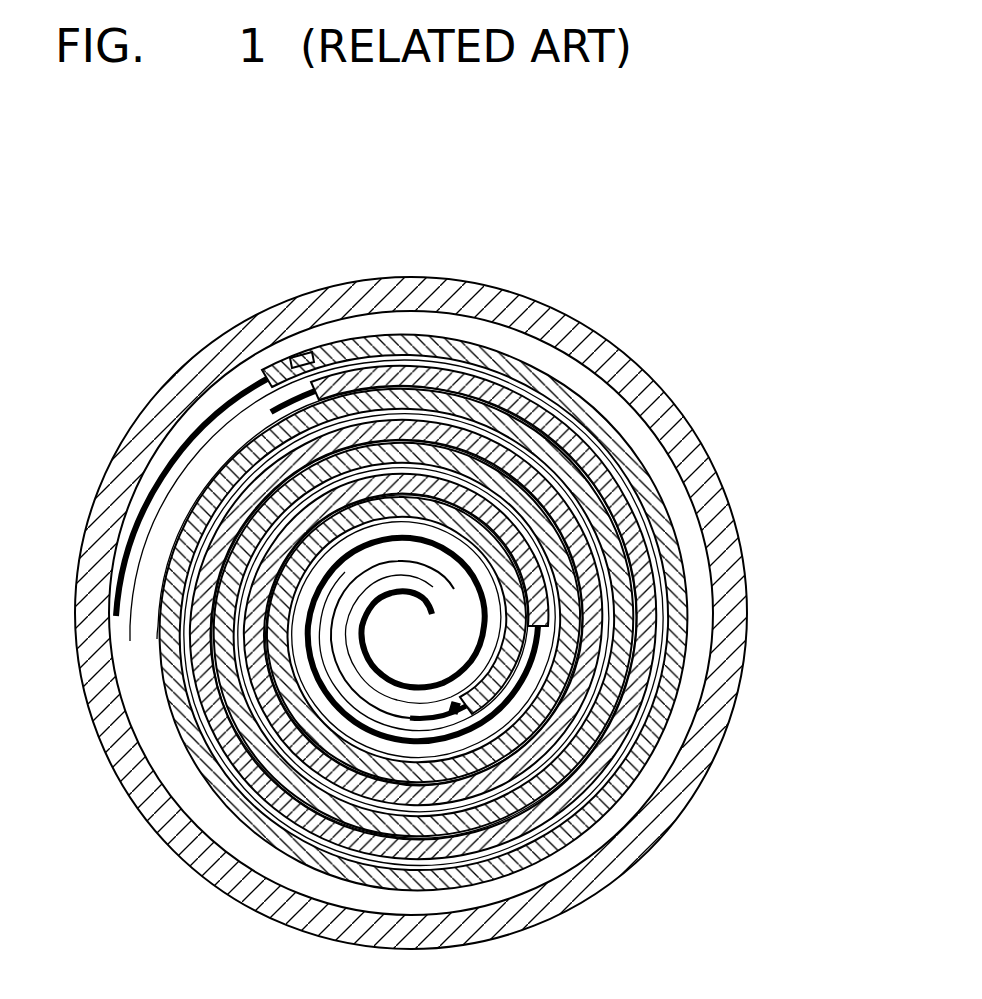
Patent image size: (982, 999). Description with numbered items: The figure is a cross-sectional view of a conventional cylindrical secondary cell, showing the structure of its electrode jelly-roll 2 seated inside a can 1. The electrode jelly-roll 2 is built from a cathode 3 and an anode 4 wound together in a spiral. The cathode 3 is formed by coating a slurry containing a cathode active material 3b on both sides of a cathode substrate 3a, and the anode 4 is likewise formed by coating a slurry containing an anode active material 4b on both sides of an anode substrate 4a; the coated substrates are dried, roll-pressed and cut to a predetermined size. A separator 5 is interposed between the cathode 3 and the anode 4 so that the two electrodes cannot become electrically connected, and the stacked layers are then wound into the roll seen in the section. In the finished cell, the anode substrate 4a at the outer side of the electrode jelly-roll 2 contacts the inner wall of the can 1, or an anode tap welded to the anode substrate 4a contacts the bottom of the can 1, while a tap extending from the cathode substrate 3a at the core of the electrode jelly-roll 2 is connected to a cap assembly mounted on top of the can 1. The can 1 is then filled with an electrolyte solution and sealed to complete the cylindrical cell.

The can 1 is at (632, 352).
The electrode jelly-roll 2 is at (464, 534).
The cathode 3 is at (585, 677).
The cathode substrate 3a is at (388, 607).
The cathode active material 3b is at (458, 708).
The anode 4 is at (221, 397).
The anode substrate 4a is at (262, 385).
The anode active material 4b is at (326, 352).
The separator 5 is at (205, 480).